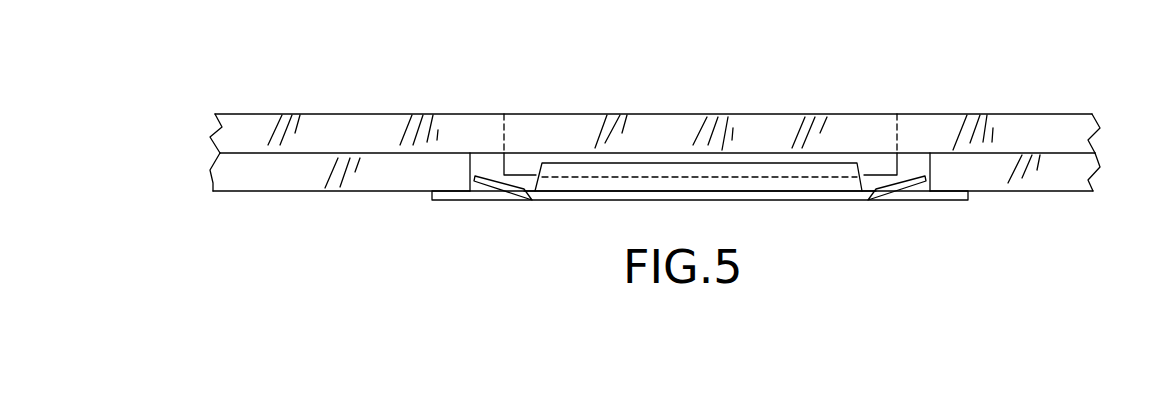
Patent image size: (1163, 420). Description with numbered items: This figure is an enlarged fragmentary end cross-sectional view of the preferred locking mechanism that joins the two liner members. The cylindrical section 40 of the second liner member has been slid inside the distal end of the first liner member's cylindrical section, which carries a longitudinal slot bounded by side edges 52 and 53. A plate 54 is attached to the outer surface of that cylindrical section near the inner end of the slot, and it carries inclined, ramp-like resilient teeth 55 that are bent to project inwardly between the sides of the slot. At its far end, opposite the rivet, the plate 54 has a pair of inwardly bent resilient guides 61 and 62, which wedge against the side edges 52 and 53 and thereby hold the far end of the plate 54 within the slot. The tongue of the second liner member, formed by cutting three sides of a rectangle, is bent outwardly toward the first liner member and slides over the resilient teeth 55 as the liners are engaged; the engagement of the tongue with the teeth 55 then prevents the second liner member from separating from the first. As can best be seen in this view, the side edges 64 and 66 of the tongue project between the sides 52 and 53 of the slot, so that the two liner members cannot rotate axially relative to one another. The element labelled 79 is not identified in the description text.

The cylindrical section of the second liner member 40 is at (1027, 97).
The circuit board 79 is at (1057, 205).
The side edge of slot 52 is at (480, 155).
The side edge of slot 53 is at (930, 160).
The plate 54 is at (945, 202).
The resilient teeth 55 is at (745, 163).
The resilient guide 61 is at (486, 188).
The resilient guide 62 is at (917, 190).
The side edge of tongue 64 is at (506, 167).
The side edge of tongue 66 is at (895, 163).